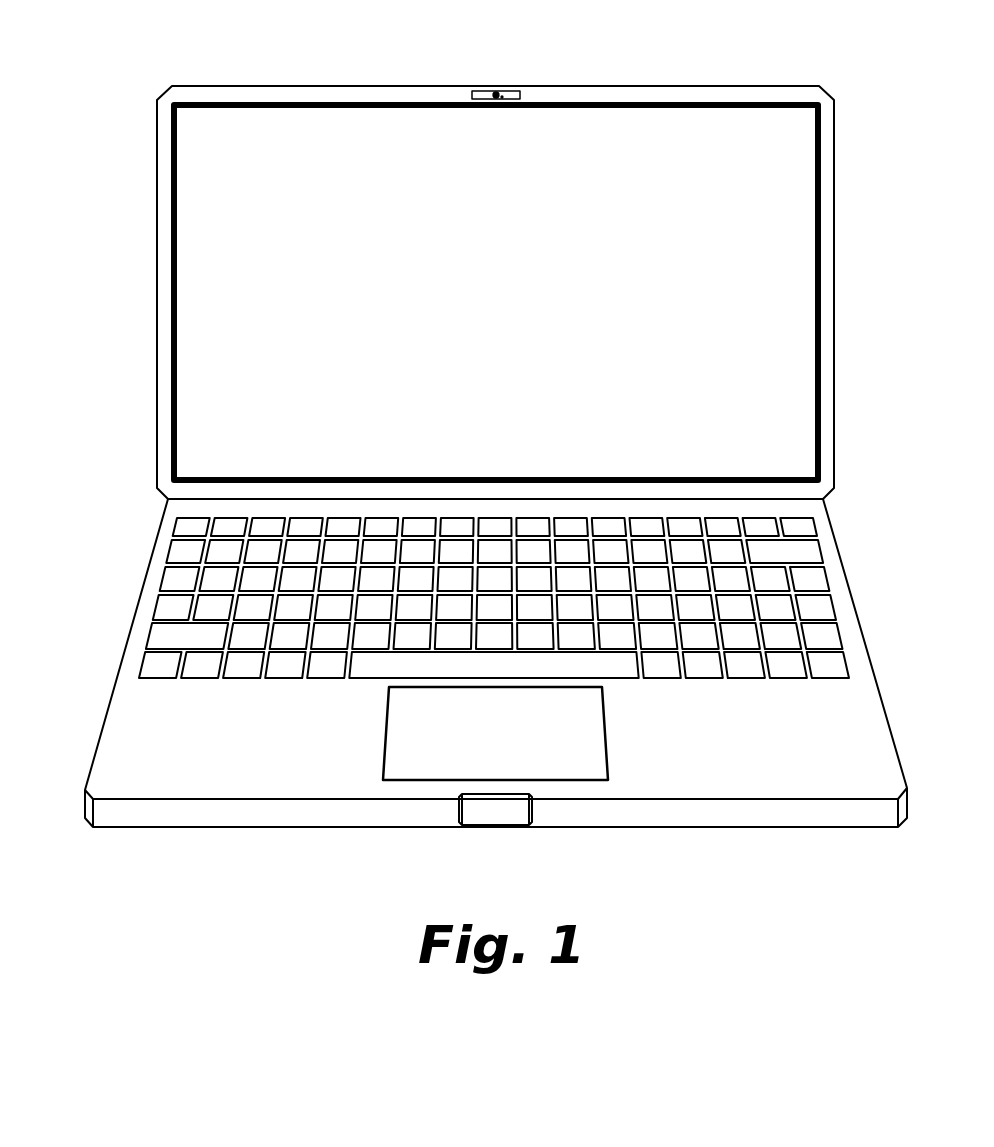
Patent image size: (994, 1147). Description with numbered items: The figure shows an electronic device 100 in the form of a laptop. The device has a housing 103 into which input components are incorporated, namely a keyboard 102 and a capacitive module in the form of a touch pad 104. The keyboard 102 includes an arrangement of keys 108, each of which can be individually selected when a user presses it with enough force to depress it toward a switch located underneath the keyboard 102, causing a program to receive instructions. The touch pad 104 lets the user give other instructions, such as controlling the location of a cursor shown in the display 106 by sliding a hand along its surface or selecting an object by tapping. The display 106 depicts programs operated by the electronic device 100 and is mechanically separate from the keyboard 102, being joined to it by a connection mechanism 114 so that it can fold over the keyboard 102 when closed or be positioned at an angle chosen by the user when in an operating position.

The electronic device 100 is at (90, 70).
The keyboard 102 is at (110, 408).
The housing 103 is at (872, 722).
The touch pad 104 is at (402, 728).
The display 106 is at (270, 211).
The key 108 is at (803, 552).
The connection mechanism 114 is at (168, 499).